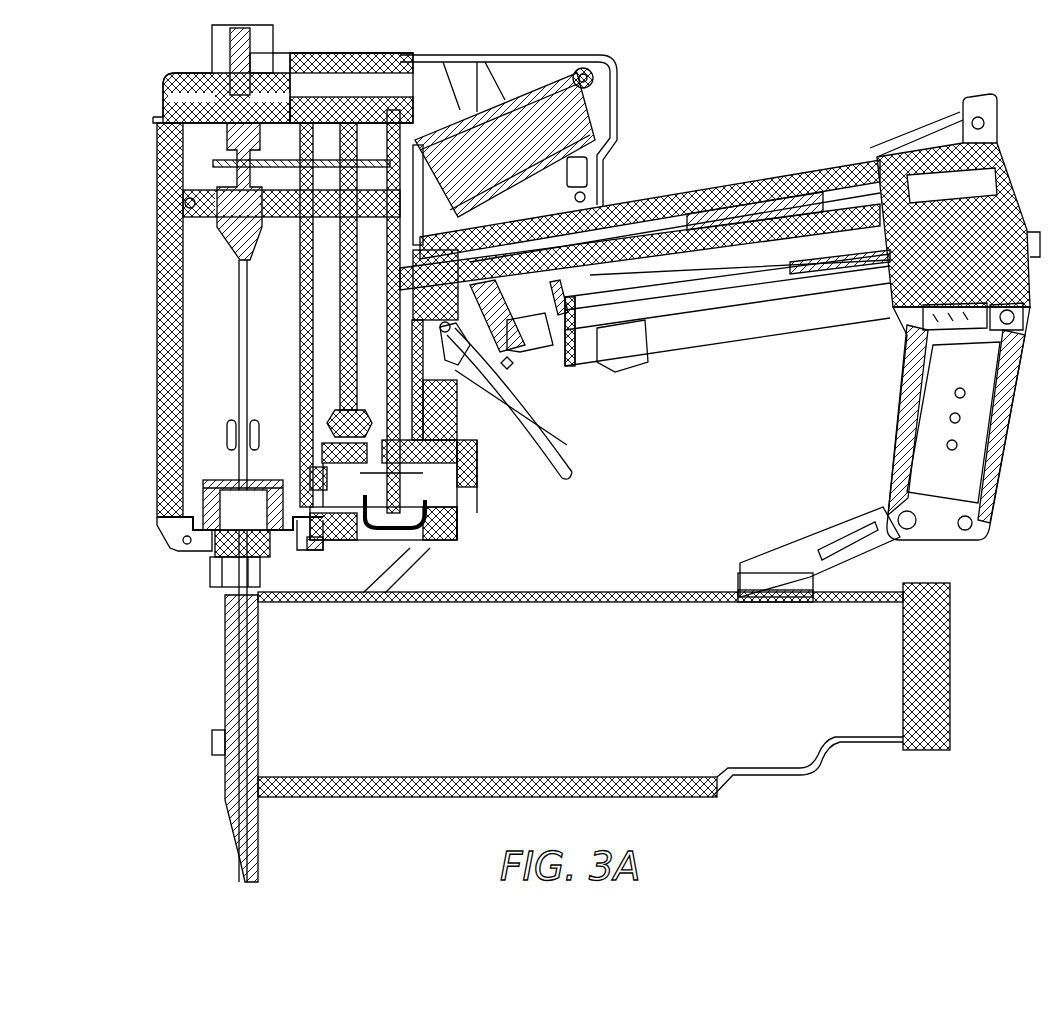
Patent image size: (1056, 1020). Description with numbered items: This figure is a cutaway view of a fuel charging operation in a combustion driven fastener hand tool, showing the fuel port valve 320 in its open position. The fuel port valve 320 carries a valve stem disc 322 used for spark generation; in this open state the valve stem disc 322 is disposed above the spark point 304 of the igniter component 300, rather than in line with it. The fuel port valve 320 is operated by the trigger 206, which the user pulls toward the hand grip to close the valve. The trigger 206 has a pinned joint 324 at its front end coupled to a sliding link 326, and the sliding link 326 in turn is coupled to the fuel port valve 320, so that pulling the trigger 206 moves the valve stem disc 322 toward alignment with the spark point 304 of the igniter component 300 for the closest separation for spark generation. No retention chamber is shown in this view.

The trigger 206 is at (516, 401).
The igniter component 300 is at (456, 473).
The spark point 304 is at (388, 450).
The fuel port valve 320 is at (323, 448).
The valve stem disc 322 is at (325, 423).
The pinned joint 324 is at (449, 339).
The sliding link 326 is at (450, 518).